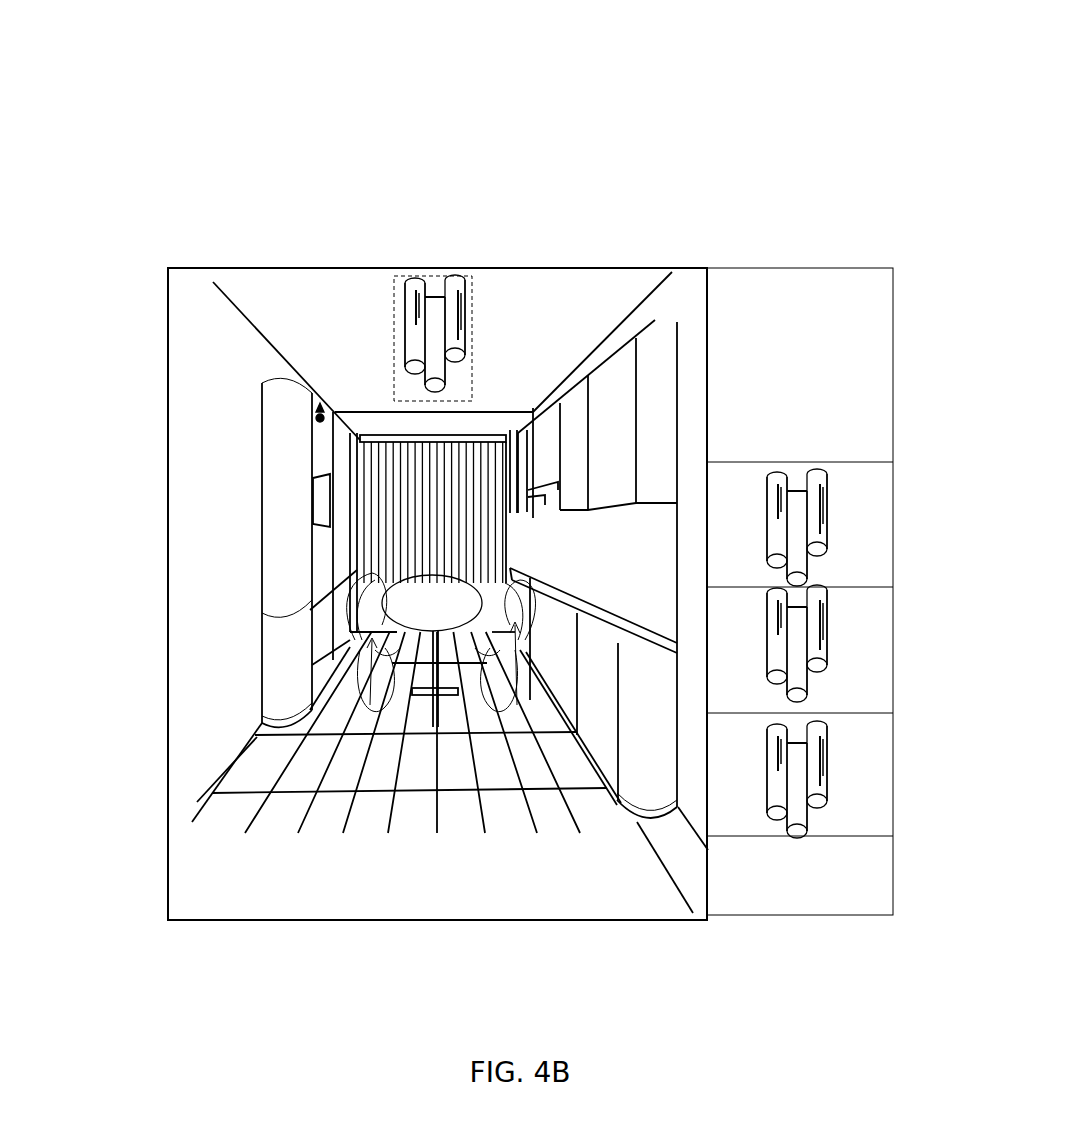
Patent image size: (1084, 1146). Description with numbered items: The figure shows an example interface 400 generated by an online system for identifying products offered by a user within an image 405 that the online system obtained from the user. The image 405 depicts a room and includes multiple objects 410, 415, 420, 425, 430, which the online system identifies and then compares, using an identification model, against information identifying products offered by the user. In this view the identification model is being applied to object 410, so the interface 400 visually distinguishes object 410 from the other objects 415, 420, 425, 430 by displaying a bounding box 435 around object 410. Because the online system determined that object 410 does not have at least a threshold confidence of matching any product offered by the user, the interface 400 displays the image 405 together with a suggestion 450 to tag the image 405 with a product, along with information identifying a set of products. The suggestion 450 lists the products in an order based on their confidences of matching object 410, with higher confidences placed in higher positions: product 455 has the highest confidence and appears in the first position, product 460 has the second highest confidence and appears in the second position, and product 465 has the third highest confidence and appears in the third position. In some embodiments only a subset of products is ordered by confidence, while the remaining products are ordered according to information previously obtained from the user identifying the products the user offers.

The interface 400 is at (393, 160).
The image 405 is at (168, 598).
The object 410 is at (417, 313).
The object 415 is at (608, 512).
The object 420 is at (517, 622).
The object 425 is at (372, 645).
The object 430 is at (320, 403).
The bounding box 435 is at (457, 276).
The suggestion 450 is at (800, 268).
The product 455 is at (875, 527).
The product 460 is at (875, 650).
The product 465 is at (875, 772).